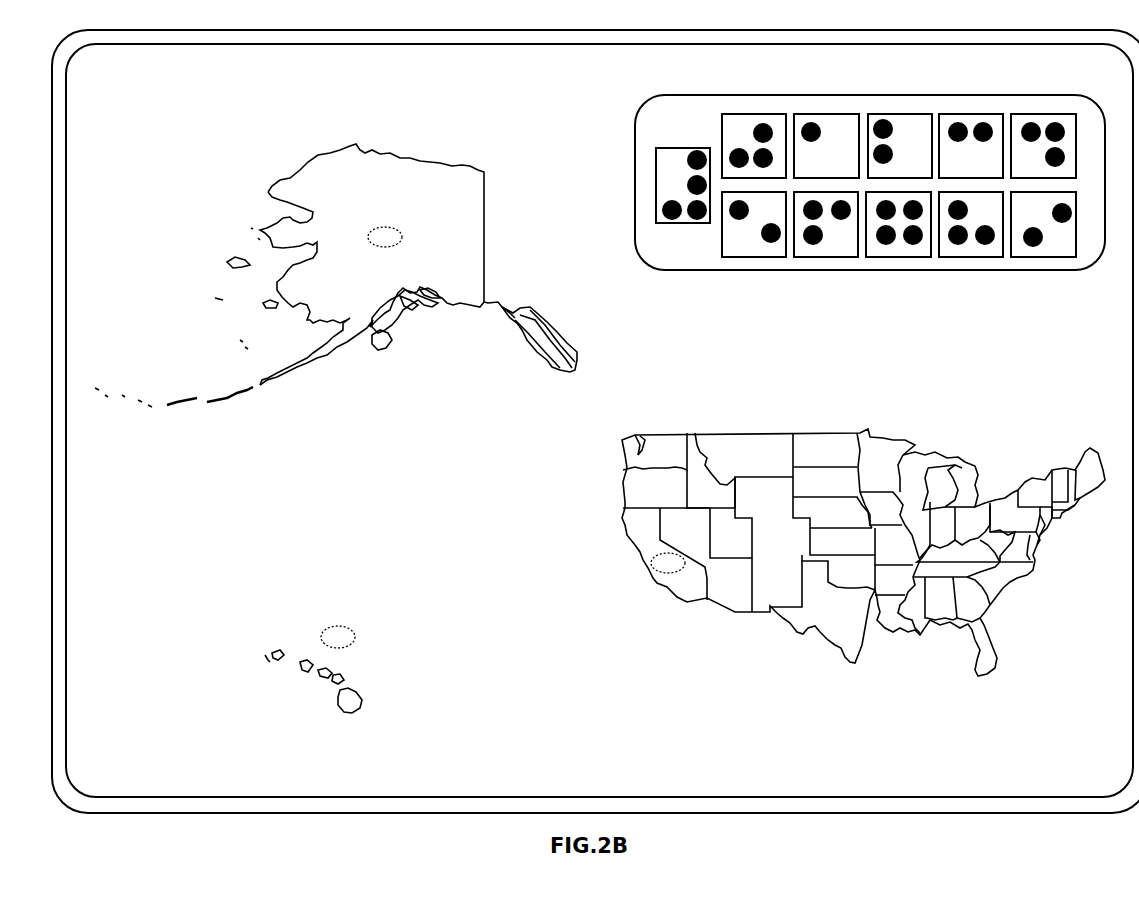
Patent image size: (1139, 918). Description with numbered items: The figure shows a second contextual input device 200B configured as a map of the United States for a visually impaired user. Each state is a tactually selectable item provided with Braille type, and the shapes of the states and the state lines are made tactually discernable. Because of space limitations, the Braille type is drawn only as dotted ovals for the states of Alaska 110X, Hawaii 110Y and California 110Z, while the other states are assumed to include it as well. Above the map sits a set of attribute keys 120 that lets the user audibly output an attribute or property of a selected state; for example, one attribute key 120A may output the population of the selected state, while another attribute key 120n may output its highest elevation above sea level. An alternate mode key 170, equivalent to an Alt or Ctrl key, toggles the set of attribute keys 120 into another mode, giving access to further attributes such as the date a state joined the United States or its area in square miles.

The contextual input device 200B is at (154, 782).
The set of attribute keys 120 is at (700, 255).
The attribute key 120A is at (840, 113).
The attribute key 120n is at (1078, 220).
The alternate mode key 170 is at (657, 187).
The Alaska 110X is at (402, 235).
The Hawaii 110Y is at (355, 633).
The California 110Z is at (651, 565).